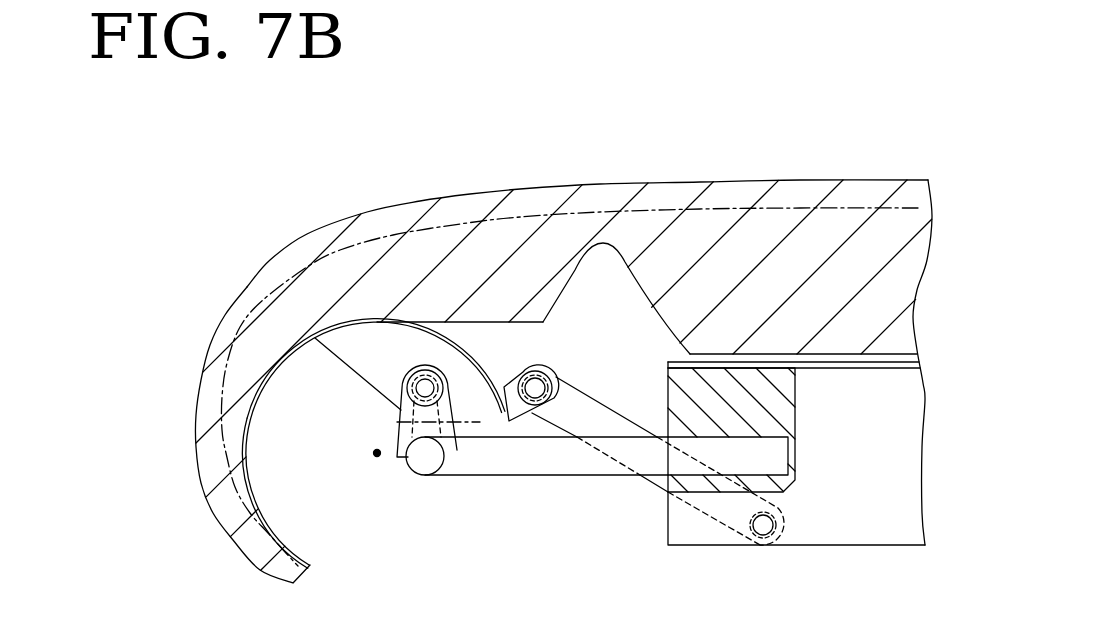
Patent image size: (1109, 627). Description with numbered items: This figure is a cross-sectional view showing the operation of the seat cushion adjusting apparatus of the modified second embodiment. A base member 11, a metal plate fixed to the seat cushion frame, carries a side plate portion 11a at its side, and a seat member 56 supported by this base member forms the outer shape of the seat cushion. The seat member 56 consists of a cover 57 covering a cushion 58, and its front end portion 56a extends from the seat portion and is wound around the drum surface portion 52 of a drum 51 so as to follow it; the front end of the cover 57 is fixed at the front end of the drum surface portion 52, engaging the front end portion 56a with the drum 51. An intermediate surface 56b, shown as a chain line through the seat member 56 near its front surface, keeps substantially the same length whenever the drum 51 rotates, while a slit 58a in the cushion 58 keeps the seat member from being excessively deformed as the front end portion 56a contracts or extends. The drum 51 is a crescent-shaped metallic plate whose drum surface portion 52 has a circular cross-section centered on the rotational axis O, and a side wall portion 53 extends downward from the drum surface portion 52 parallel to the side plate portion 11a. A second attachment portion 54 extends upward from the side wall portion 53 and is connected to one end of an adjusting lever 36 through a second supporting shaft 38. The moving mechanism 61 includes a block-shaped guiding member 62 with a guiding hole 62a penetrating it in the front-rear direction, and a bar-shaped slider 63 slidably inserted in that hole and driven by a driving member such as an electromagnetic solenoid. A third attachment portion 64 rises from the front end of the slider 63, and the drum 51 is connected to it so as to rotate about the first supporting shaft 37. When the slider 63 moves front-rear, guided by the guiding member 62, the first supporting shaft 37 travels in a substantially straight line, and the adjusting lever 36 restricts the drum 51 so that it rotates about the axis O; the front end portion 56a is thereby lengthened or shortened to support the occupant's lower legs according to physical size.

The seat member 56 is at (349, 156).
The cover 57 is at (300, 237).
The cushion 58 is at (367, 222).
The front end portion 56a is at (217, 325).
The intermediate surface 56b is at (718, 210).
The slit 58a is at (635, 284).
The drum 51 is at (437, 320).
The drum surface portion 52 is at (247, 448).
The side wall portion 53 is at (330, 350).
The first supporting shaft 37 is at (412, 375).
The second attachment portion 54 is at (508, 383).
The second supporting shaft 38 is at (540, 390).
The adjusting lever 36 is at (627, 420).
The third attachment portion 64 is at (400, 428).
The slider 63 is at (556, 475).
The rotational axis O is at (374, 455).
The base member 11 is at (884, 380).
The side plate portion 11a is at (821, 380).
The moving mechanism 61 is at (829, 495).
The guiding member 62 is at (783, 408).
The guiding hole 62a is at (772, 445).